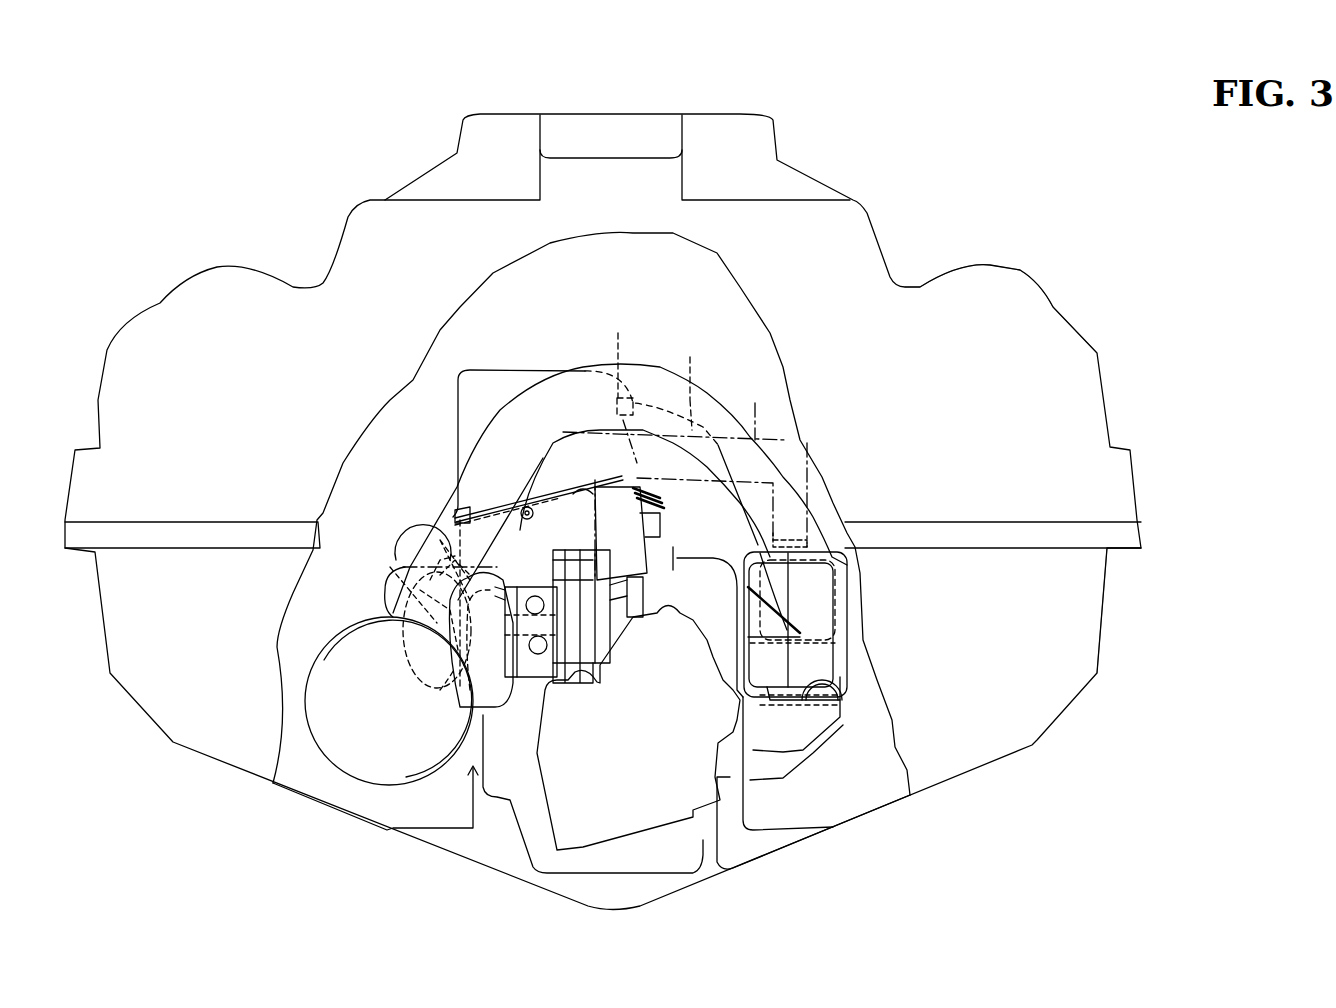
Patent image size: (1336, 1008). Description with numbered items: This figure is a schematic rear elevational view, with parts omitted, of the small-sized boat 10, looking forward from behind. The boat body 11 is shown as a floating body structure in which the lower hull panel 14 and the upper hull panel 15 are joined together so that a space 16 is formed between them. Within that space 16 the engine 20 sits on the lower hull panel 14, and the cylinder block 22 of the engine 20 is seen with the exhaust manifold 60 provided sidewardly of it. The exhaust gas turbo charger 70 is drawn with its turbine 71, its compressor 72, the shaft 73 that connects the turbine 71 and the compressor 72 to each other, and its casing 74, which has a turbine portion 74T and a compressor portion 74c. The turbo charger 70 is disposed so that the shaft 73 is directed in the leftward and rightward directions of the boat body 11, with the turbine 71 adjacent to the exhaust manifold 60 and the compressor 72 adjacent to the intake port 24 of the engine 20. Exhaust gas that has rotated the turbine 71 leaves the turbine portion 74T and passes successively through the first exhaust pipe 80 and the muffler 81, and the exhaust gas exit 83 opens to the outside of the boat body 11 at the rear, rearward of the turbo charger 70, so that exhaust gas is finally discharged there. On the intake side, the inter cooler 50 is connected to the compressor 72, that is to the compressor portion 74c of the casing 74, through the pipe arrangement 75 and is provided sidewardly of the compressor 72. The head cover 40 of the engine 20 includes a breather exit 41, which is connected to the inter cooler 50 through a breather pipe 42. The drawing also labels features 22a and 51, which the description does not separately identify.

The small-sized boat 10 is at (903, 180).
The boat body 11 is at (1066, 308).
The lower hull panel 14 is at (1098, 630).
The upper hull panel 15 is at (1020, 270).
The space 16 is at (790, 468).
The engine 20 is at (553, 367).
The cylinder block 22 is at (623, 515).
The throttle shaft 22a is at (550, 475).
The intake port 24 is at (645, 486).
The head cover 40 is at (495, 383).
The breather exit 41 is at (618, 384).
The breather pipe 42 is at (690, 380).
The inter cooler 50 is at (838, 612).
The vapor separator inlet 51 is at (810, 552).
The exhaust manifold 60 is at (391, 593).
The exhaust gas turbo charger 70 is at (452, 705).
The turbine 71 is at (455, 660).
The compressor 72 is at (610, 650).
The shaft 73 is at (527, 663).
The casing 74 is at (446, 692).
The compressor portion 74c is at (597, 683).
The turbine portion 74T is at (450, 722).
The pipe arrangement 75 is at (663, 466).
The first exhaust pipe 80 is at (318, 682).
The muffler 81 is at (640, 380).
The exhaust gas exit 83 is at (733, 868).